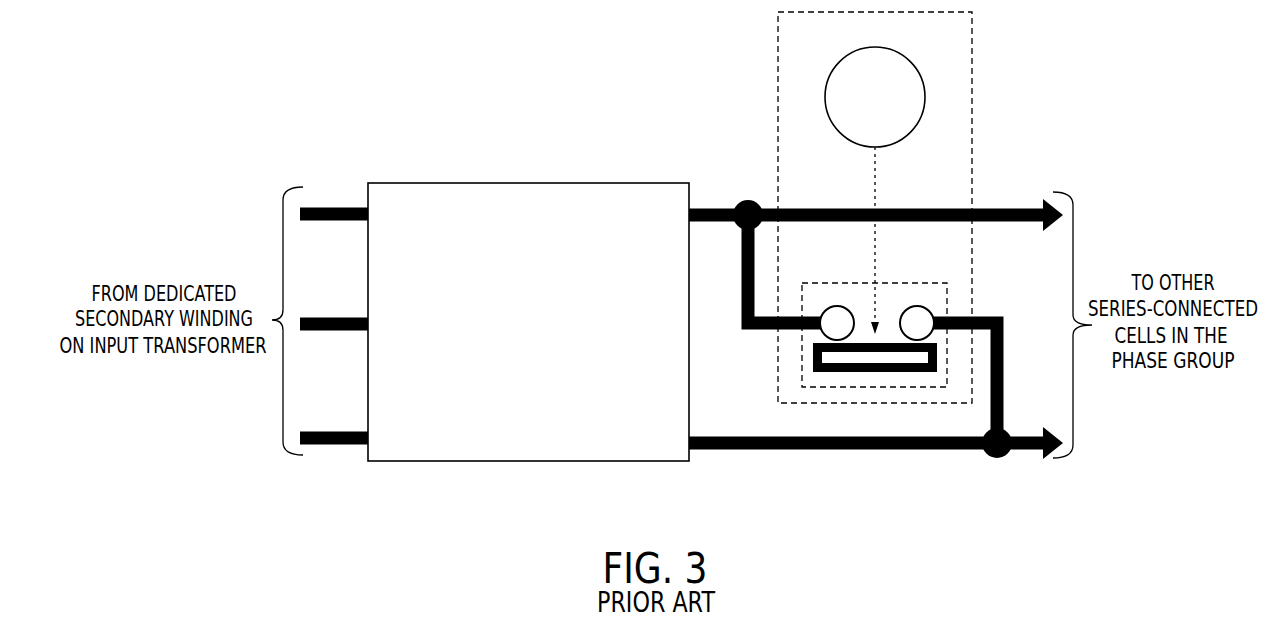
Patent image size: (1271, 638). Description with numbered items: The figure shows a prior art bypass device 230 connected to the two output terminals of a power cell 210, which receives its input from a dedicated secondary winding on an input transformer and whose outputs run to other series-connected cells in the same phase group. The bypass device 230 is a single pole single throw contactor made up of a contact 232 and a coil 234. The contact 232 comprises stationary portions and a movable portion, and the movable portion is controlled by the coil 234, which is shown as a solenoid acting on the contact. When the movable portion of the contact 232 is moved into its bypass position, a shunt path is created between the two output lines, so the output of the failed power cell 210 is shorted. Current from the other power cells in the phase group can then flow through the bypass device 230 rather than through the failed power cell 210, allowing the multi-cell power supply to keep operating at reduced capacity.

The power cell 210 is at (548, 462).
The bypass device 230 is at (973, 108).
The contact 232 is at (936, 390).
The coil 234 is at (838, 63).